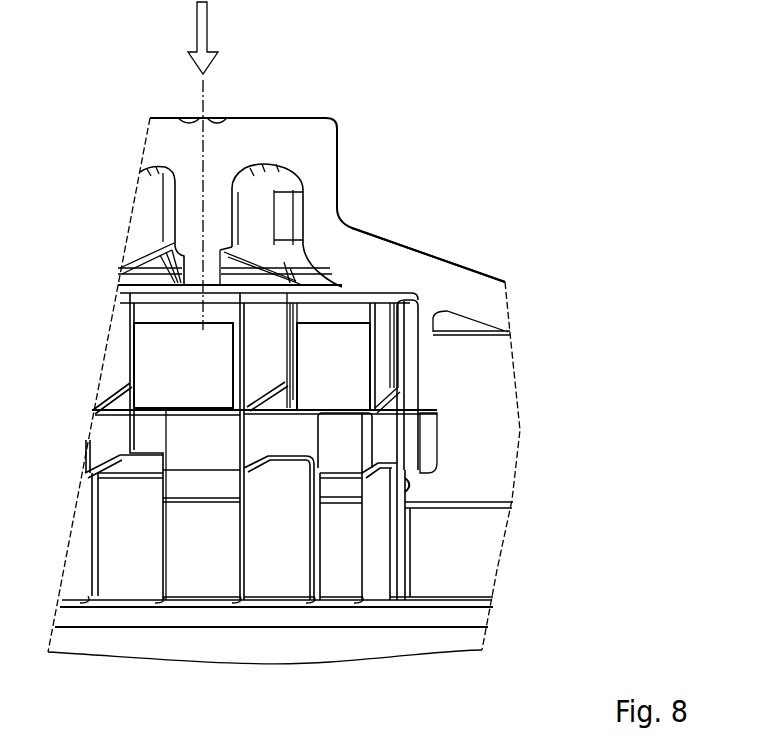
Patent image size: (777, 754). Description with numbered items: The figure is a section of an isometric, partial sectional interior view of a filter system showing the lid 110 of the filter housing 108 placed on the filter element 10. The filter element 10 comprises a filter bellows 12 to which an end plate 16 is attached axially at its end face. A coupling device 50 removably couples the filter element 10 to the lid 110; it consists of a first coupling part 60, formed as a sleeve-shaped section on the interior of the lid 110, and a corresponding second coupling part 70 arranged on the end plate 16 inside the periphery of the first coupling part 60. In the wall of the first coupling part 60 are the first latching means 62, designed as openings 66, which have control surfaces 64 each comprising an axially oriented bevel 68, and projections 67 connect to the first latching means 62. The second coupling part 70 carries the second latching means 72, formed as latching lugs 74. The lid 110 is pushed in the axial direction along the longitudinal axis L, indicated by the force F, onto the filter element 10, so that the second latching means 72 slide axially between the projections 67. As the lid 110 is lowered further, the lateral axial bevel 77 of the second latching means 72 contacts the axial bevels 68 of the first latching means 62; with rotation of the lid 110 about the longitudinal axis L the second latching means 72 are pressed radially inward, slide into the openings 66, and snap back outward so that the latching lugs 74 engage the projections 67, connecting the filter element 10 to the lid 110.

The filter element 10 is at (433, 647).
The filter bellows 12 is at (404, 648).
The end plate 16 is at (480, 620).
The coupling device 50 is at (493, 468).
The first coupling part 60 is at (417, 378).
The first latching means 62 is at (134, 345).
The control surfaces 64 is at (326, 356).
The openings 66 is at (177, 407).
The projections 67 is at (193, 477).
The axial bevel 68 is at (277, 401).
The second coupling part 70 is at (405, 555).
The second latching means 72 is at (390, 558).
The latching lugs 74 is at (404, 488).
The lateral axial bevel 77 is at (253, 463).
The filter housing 108 is at (451, 264).
The lid 110 is at (382, 250).
The force F is at (201, 24).
The longitudinal axis L is at (203, 88).